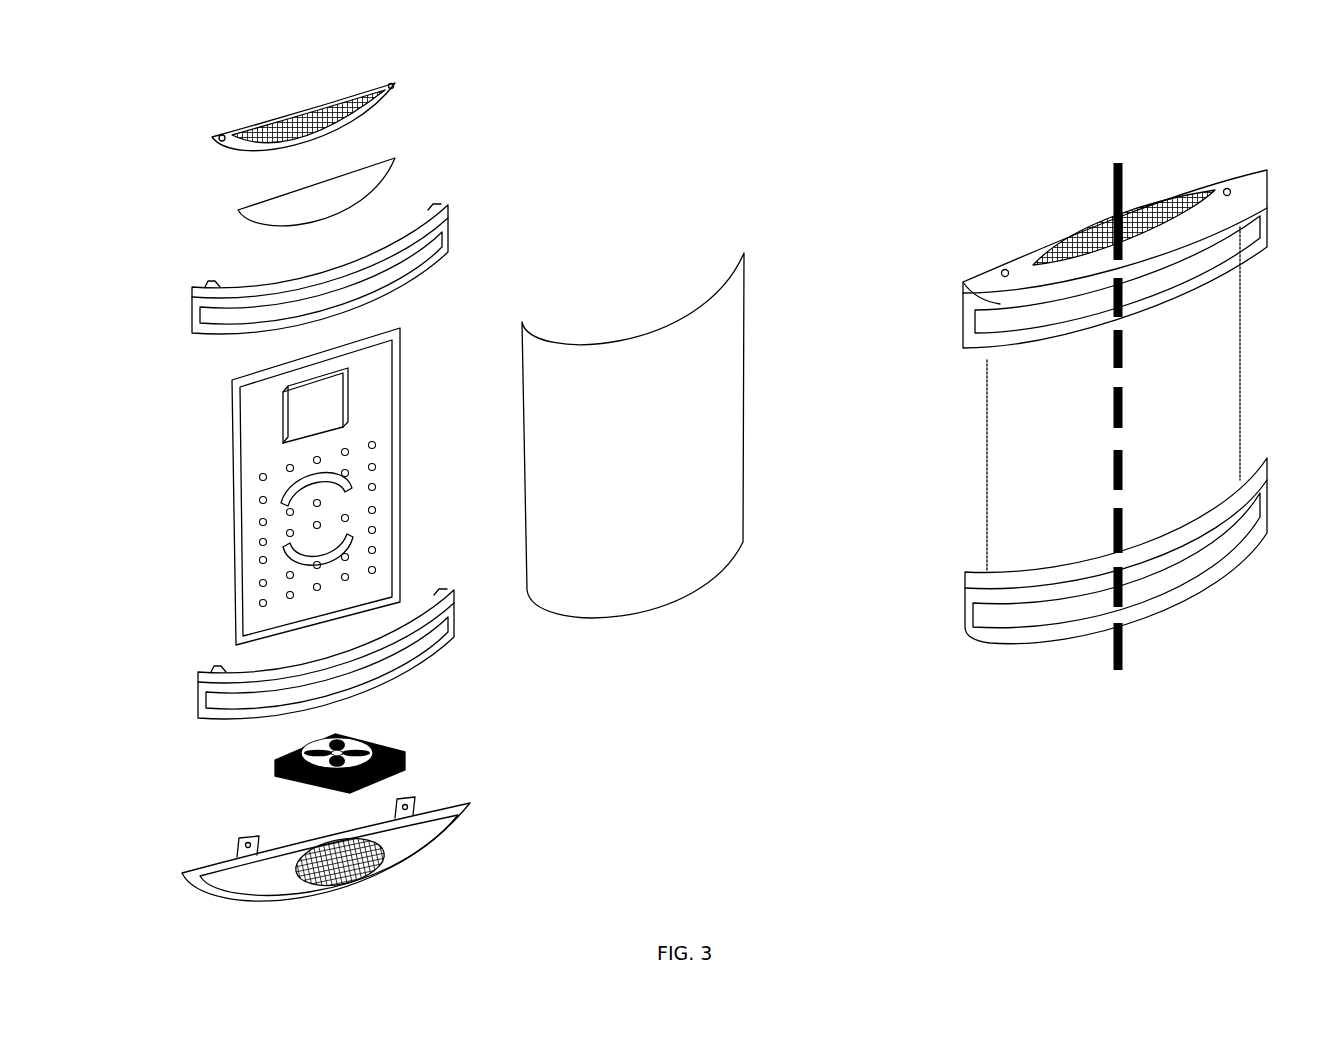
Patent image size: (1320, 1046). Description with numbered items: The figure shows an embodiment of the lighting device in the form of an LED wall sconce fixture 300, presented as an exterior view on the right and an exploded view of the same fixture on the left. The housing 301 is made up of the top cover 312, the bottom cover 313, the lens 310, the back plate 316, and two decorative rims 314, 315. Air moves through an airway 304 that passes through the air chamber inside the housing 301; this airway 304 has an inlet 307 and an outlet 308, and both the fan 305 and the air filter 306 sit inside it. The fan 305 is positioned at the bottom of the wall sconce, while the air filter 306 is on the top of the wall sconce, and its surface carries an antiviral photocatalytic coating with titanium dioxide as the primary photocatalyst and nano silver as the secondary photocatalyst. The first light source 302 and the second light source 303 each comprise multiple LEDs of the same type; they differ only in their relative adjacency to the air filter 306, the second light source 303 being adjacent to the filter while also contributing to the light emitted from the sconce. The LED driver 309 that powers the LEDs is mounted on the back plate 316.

The LED wall sconce fixture 300 is at (1061, 421).
The housing 301 is at (1018, 276).
The first light source 302 is at (260, 524).
The second light source 303 is at (285, 467).
The airway 304 is at (1118, 421).
The fan 305 is at (275, 764).
The air filter 306 is at (285, 207).
The inlet 307 is at (363, 858).
The outlet 308 is at (303, 122).
The LED driver 309 is at (335, 400).
The lens 310 is at (650, 365).
The top cover 312 is at (395, 100).
The bottom cover 313 is at (435, 823).
The decorative rim 314 is at (212, 667).
The decorative rim 315 is at (206, 288).
The back plate 316 is at (262, 420).